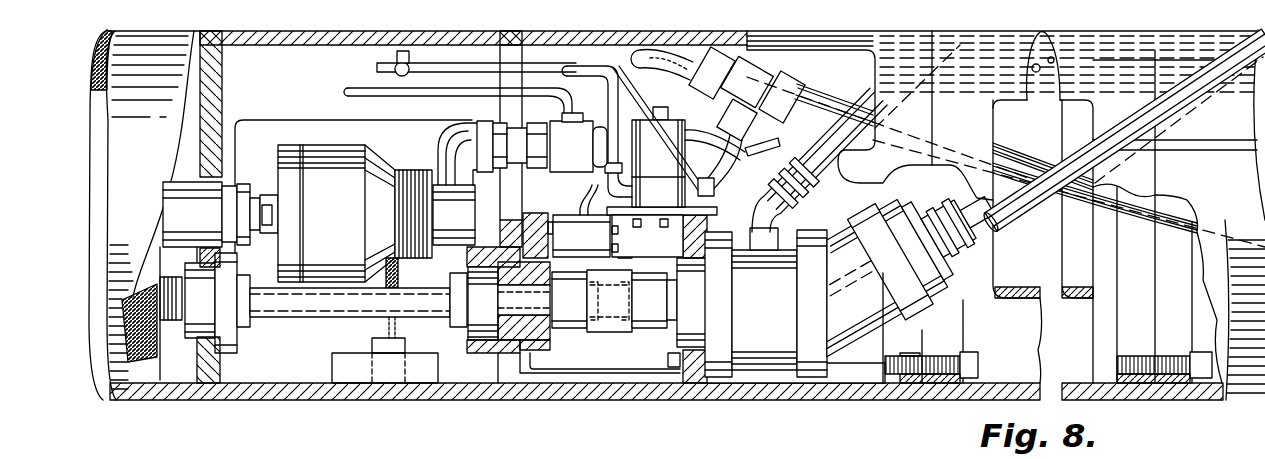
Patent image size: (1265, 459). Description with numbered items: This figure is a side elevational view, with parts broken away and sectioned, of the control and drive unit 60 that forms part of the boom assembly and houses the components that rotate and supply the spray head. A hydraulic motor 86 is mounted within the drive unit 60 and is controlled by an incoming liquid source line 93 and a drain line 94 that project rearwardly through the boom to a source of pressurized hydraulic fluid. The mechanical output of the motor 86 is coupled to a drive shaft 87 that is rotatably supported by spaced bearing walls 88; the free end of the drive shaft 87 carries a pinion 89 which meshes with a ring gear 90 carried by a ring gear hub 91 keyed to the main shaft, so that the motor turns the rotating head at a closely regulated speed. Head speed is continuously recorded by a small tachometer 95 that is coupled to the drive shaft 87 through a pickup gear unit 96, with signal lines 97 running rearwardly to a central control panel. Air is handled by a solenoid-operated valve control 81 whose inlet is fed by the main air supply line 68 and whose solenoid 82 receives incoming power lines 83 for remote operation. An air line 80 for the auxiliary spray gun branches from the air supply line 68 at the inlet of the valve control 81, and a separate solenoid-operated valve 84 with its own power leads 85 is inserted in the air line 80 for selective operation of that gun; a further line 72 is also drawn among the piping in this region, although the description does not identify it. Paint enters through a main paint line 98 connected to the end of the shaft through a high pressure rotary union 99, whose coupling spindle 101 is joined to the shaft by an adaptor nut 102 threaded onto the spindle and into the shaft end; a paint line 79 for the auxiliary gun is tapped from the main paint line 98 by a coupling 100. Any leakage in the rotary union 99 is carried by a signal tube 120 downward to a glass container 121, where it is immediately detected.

The drive unit 60 is at (378, 398).
The main air supply line 68 is at (846, 98).
The conduit 72 is at (606, 68).
The paint line 79 is at (358, 95).
The air line 80 is at (480, 64).
The solenoid-operated valve control 81 is at (664, 212).
The solenoid 82 is at (697, 124).
The incoming power lines 83 is at (768, 152).
The solenoid-operated valve 84 is at (409, 73).
The power leads 85 is at (412, 55).
The hydraulic motor 86 is at (772, 362).
The drive shaft 87 is at (316, 314).
The bearing walls 88 is at (220, 372).
The pinion 89 is at (198, 338).
The ring gear 90 is at (160, 345).
The ring gear hub 91 is at (128, 292).
The liquid source line 93 is at (1020, 212).
The drain line 94 is at (822, 180).
The tachometer 95 is at (607, 250).
The pickup gear unit 96 is at (548, 262).
The signal lines 97 is at (578, 200).
The main paint line 98 is at (590, 148).
The high pressure rotary union 99 is at (352, 148).
The coupling 100 is at (590, 108).
The coupling spindle 101 is at (268, 194).
The adaptor nut 102 is at (243, 184).
The signal tube 120 is at (398, 270).
The glass container 121 is at (406, 346).